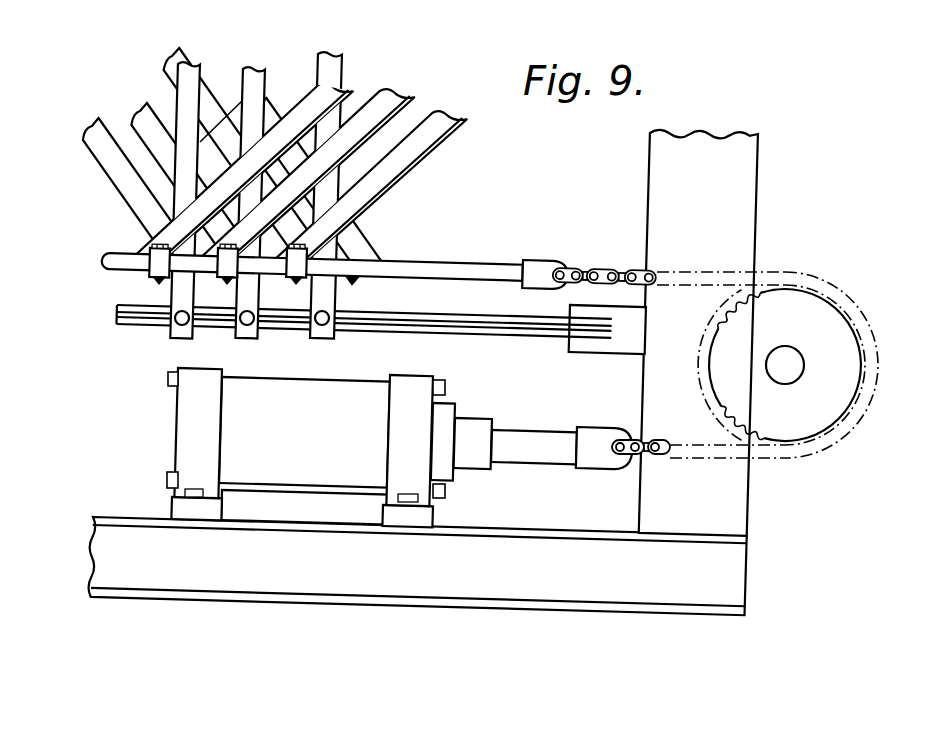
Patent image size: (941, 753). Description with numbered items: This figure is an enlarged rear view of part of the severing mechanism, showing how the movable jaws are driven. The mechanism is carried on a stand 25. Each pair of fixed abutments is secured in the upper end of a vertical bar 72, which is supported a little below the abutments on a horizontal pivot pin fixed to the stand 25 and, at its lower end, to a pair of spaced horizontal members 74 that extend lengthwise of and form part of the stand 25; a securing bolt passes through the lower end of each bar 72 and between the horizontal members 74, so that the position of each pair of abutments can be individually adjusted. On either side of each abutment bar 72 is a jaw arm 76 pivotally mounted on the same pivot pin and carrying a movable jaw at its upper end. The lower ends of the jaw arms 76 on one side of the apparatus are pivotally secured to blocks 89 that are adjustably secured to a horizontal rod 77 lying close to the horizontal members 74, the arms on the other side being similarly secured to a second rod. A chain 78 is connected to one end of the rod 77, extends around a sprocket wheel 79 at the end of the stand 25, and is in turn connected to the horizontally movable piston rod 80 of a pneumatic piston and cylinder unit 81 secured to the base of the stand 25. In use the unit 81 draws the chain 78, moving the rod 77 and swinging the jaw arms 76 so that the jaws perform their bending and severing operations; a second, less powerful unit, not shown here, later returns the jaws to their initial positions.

The stand 25 is at (748, 168).
The bar 72 is at (188, 102).
The horizontal members 74 is at (505, 324).
The jaw arms 76 is at (168, 72).
The horizontal rod 77 is at (465, 267).
The chain 78 is at (605, 268).
The sprocket wheel 79 is at (779, 305).
The piston rod 80 is at (530, 437).
The pneumatic piston and cylinder unit 81 is at (350, 400).
The blocks 89 is at (160, 272).